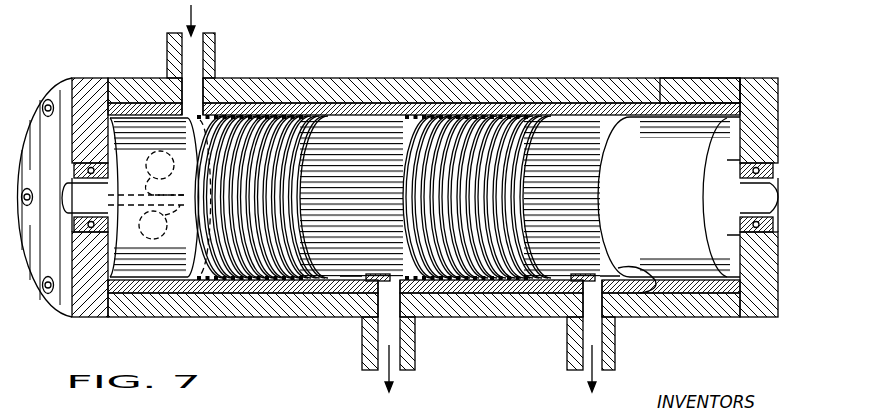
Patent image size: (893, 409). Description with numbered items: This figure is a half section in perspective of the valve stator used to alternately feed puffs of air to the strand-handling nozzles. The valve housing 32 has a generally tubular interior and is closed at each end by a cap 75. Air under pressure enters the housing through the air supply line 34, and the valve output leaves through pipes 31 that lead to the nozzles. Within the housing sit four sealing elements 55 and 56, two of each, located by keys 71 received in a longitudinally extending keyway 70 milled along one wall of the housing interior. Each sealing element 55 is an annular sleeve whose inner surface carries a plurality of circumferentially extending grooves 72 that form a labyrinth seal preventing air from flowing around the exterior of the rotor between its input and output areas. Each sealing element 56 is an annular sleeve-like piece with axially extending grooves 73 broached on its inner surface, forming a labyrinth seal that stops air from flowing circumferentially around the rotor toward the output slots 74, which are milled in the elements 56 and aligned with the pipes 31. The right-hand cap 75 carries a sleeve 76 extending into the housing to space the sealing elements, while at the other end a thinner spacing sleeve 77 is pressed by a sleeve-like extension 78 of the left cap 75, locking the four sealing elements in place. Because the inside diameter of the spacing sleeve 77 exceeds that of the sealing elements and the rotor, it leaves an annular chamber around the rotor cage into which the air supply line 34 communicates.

The pipes 31 is at (415, 362).
The valve housing 32 is at (538, 78).
The air supply line 34 is at (217, 58).
The sealing elements 55 is at (288, 296).
The sealing elements 56 is at (386, 104).
The keyway 70 is at (165, 173).
The keys 71 is at (159, 222).
The circumferentially extending grooves 72 is at (304, 118).
The axially extending grooves 73 is at (411, 120).
The output slots 74 is at (418, 295).
The cap 75 is at (62, 92).
The sleeve 76 is at (683, 78).
The spacing sleeve 77 is at (201, 316).
The sleeve-like extension 78 is at (122, 106).